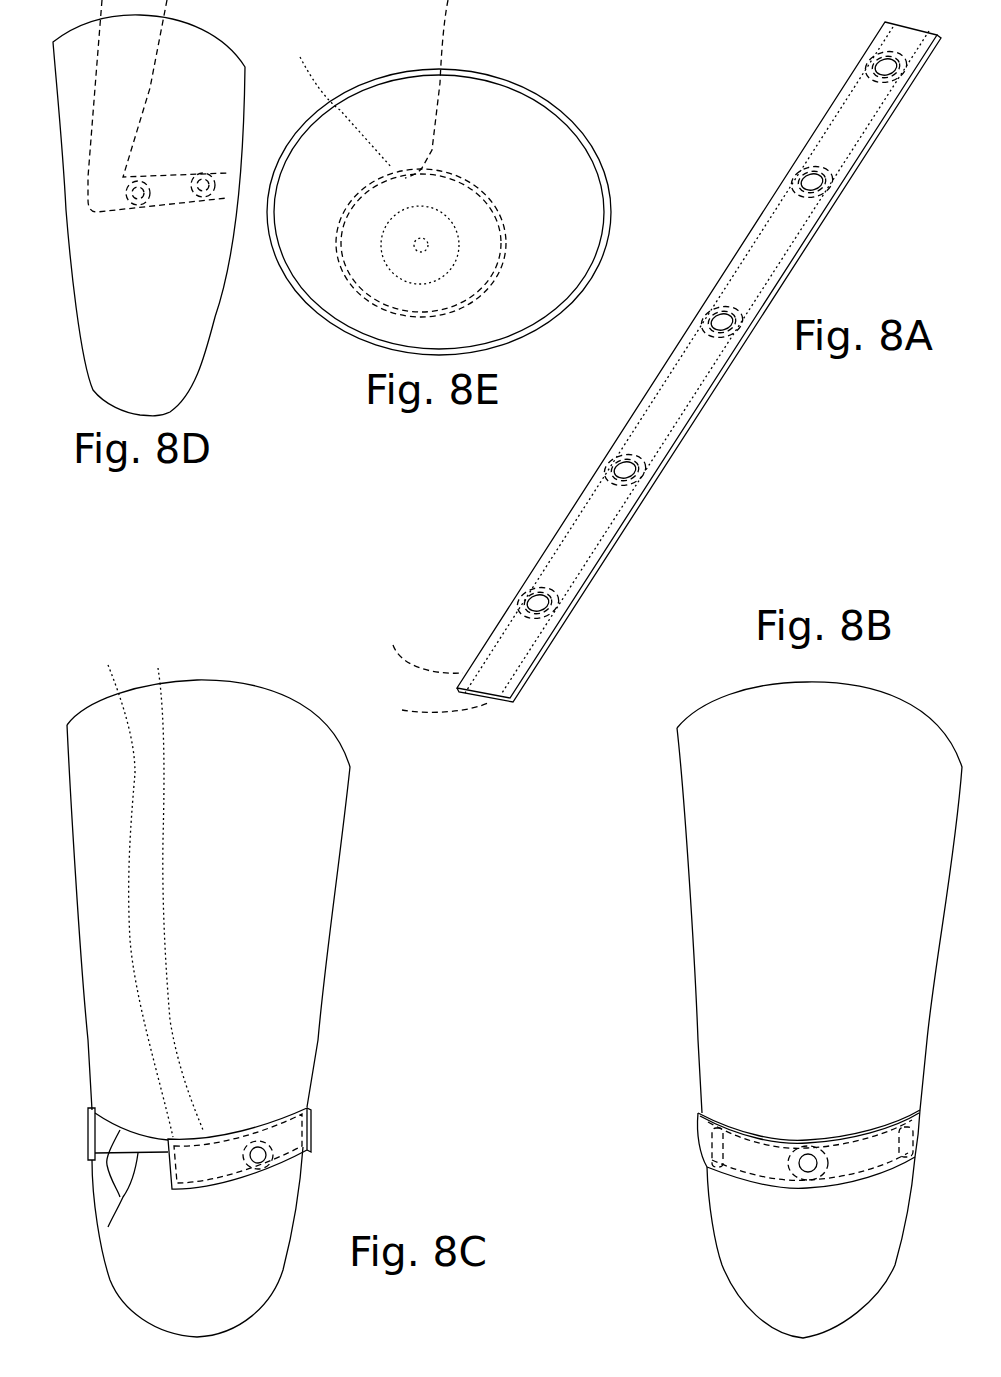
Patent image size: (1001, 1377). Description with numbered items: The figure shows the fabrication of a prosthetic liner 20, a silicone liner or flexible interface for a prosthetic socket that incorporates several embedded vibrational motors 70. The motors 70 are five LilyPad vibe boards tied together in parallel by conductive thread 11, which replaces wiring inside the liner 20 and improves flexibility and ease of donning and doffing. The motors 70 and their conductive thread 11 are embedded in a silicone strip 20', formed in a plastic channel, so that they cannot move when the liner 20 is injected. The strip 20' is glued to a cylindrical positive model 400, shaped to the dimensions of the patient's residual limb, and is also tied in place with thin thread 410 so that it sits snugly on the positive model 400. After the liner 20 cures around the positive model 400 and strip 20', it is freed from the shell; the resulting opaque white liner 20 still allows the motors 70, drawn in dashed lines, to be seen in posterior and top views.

In FIG. 8D, the conductive thread 11 is at (95, 88).
In FIG. 8E, the conductive thread 11 is at (375, 142).
In FIG. 8A, the conductive thread 11 is at (572, 520).
In FIG. 8C, the conductive thread 11 is at (128, 863).
In FIG. 8B, the conductive thread 11 is at (860, 1173).
In FIG. 8D, the prosthetic liner 20 is at (165, 216).
In FIG. 8E, the prosthetic liner 20 is at (454, 212).
In FIG. 8A, the silicone strip 20' is at (667, 367).
In FIG. 8C, the silicone strip 20' is at (239, 1089).
In FIG. 8B, the silicone strip 20' is at (761, 1194).
In FIG. 8D, the vibrational motor 70 is at (143, 178).
In FIG. 8E, the vibrational motor 70 is at (435, 317).
In FIG. 8A, the vibrational motor 70 is at (797, 175).
In FIG. 8C, the vibrational motor 70 is at (270, 1148).
In FIG. 8B, the vibrational motor 70 is at (790, 1160).
In FIG. 8C, the positive model 400 is at (333, 868).
In FIG. 8B, the positive model 400 is at (702, 823).
In FIG. 8C, the thin thread 410 is at (130, 1193).